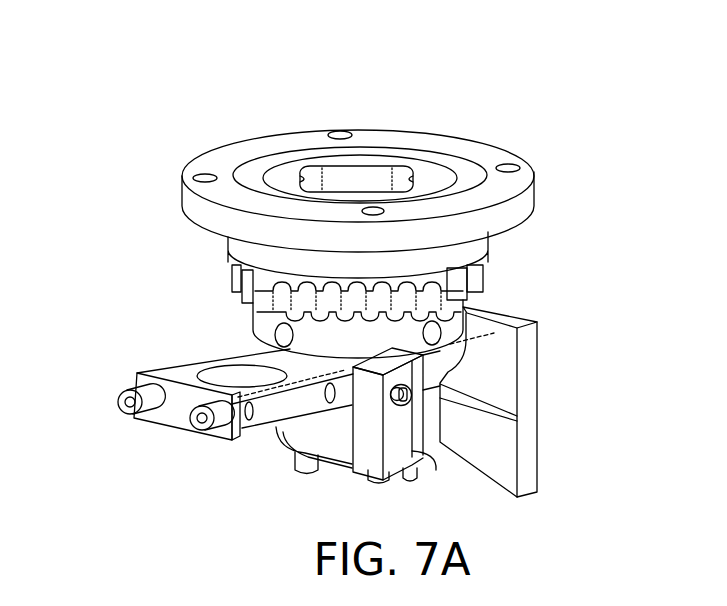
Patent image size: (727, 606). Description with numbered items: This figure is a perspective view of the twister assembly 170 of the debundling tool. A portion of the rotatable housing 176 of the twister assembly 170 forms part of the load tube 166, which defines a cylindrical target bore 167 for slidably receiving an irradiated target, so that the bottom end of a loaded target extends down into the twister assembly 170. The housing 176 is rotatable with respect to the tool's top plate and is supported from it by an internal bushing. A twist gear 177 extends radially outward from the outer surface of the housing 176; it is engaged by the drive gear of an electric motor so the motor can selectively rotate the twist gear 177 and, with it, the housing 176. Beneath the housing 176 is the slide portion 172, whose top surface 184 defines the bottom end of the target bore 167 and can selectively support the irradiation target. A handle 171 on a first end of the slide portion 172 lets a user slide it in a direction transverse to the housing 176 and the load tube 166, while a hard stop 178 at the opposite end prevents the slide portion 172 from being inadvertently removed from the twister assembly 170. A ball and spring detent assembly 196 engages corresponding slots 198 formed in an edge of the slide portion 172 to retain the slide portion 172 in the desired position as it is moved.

The twister assembly 170 is at (588, 90).
The load tube 166 is at (435, 176).
The target bore 167 is at (362, 176).
The twist gear 177 is at (478, 275).
The housing 176 is at (253, 300).
The handle 171 is at (536, 433).
The slide portion 172 is at (192, 340).
The top surface 184 is at (190, 380).
The hard stop 178 is at (166, 418).
The slots 198 is at (249, 420).
The ball and spring detent assembly 196 is at (391, 418).